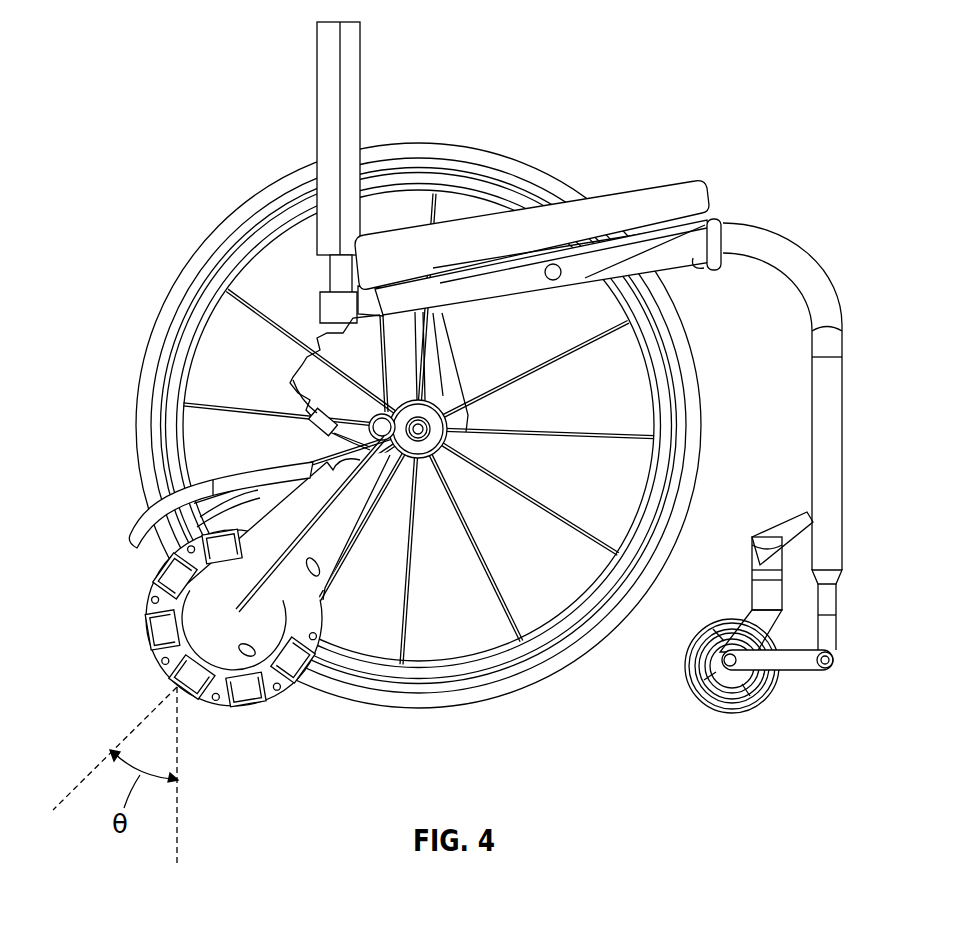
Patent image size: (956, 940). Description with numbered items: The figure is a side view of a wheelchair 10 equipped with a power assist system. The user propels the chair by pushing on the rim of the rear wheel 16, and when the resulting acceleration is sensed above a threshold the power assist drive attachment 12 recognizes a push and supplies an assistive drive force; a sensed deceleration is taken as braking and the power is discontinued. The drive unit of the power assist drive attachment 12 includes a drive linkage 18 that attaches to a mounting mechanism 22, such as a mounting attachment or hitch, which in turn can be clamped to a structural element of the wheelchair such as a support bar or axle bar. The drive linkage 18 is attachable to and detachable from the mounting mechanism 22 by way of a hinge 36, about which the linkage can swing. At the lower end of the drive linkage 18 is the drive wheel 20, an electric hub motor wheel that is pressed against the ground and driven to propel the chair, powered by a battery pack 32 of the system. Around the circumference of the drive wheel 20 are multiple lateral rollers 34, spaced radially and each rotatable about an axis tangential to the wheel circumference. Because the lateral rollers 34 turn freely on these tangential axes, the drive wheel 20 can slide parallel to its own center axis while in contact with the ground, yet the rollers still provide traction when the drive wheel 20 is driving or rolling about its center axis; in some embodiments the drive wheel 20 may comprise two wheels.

The wheelchair 10 is at (600, 36).
The power assist drive attachment 12 is at (328, 602).
The rear wheel 16 is at (273, 205).
The drive linkage 18 is at (290, 507).
The drive wheel 20 is at (213, 693).
The mounting mechanism 22 is at (425, 403).
The battery pack 32 is at (690, 243).
The lateral rollers 34 is at (215, 543).
The hinge 36 is at (380, 414).